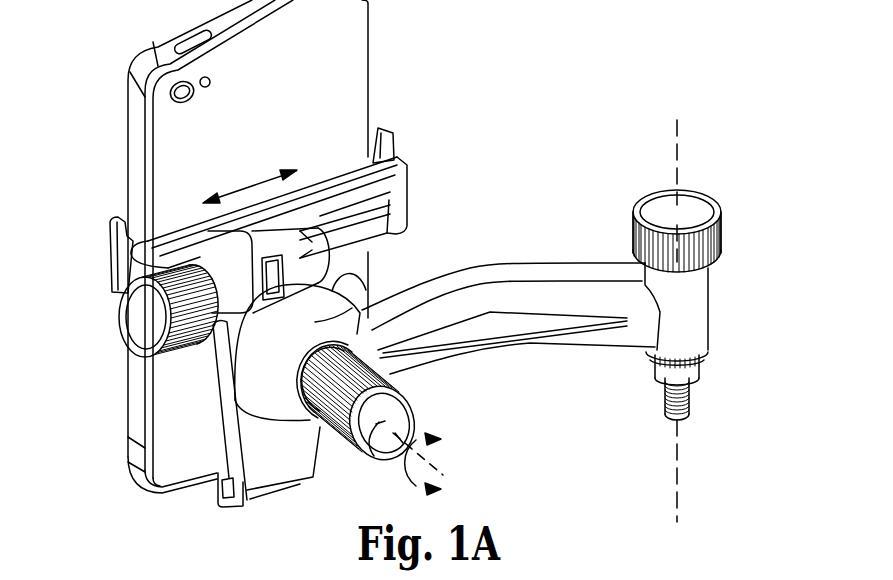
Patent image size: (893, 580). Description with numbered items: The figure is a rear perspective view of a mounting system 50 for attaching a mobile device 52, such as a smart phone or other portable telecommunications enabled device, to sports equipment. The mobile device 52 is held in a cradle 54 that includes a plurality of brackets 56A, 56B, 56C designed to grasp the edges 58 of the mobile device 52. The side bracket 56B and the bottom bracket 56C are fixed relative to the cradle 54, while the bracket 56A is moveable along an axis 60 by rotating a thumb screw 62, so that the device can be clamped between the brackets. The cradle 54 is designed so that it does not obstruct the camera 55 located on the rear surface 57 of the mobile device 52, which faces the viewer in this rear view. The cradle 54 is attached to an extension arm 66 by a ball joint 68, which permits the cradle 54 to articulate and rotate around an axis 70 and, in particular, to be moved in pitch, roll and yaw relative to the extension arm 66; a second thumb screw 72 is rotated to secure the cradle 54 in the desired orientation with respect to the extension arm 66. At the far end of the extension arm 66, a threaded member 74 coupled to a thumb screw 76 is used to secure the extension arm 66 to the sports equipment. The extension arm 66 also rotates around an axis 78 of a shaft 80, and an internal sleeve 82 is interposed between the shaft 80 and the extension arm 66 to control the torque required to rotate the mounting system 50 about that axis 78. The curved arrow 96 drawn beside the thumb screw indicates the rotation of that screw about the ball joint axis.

The mounting system 50 is at (410, 288).
The mobile device 52 is at (372, 83).
The cradle 54 is at (282, 478).
The camera 55 is at (157, 46).
The bracket 56A is at (112, 246).
The side bracket 56B is at (393, 144).
The bottom bracket 56C is at (228, 504).
The rear surface 57 is at (358, 55).
The edges 58 is at (128, 135).
The axis 60 is at (262, 186).
The thumb screw 62 is at (132, 314).
The extension arm 66 is at (510, 268).
The ball joint 68 is at (373, 268).
The axis 70 is at (375, 463).
The thumb screw 72 is at (412, 386).
The threaded member 74 is at (688, 412).
The thumb screw 76 is at (725, 230).
The axis 78 is at (677, 470).
The shaft 80 is at (692, 362).
The internal sleeve 82 is at (653, 360).
The rotation direction 96 is at (432, 436).